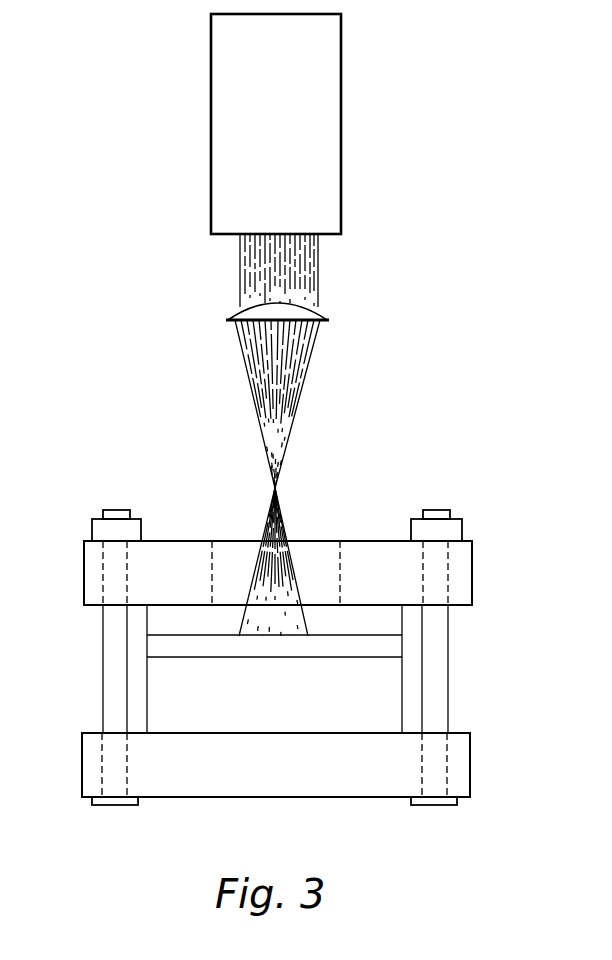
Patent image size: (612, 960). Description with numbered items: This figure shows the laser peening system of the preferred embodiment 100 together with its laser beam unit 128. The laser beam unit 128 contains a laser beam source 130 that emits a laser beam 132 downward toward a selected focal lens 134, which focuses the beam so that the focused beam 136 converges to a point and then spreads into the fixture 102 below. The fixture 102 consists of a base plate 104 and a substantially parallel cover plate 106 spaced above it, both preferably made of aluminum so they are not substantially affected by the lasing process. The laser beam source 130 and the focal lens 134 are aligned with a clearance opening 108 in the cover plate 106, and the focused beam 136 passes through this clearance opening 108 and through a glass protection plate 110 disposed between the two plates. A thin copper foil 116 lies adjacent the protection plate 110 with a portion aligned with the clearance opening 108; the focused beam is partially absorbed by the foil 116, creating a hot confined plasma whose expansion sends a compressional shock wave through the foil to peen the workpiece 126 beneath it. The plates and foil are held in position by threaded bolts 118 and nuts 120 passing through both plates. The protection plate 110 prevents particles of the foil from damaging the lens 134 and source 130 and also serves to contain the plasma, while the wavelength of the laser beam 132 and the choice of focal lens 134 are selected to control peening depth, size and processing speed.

The preferred embodiment 100 is at (571, 443).
The fixture 102 is at (473, 570).
The base plate 104 is at (471, 770).
The cover plate 106 is at (473, 598).
The clearance opening 108 is at (214, 575).
The protection plate 110 is at (160, 617).
The foil 116 is at (395, 647).
The threaded bolts 118 is at (112, 803).
The nuts 120 is at (92, 528).
The workpiece 126 is at (395, 690).
The laser beam unit 128 is at (342, 152).
The laser beam source 130 is at (310, 87).
The laser beam 132 is at (305, 279).
The focal lens 134 is at (322, 314).
The focused beam 136 is at (290, 392).